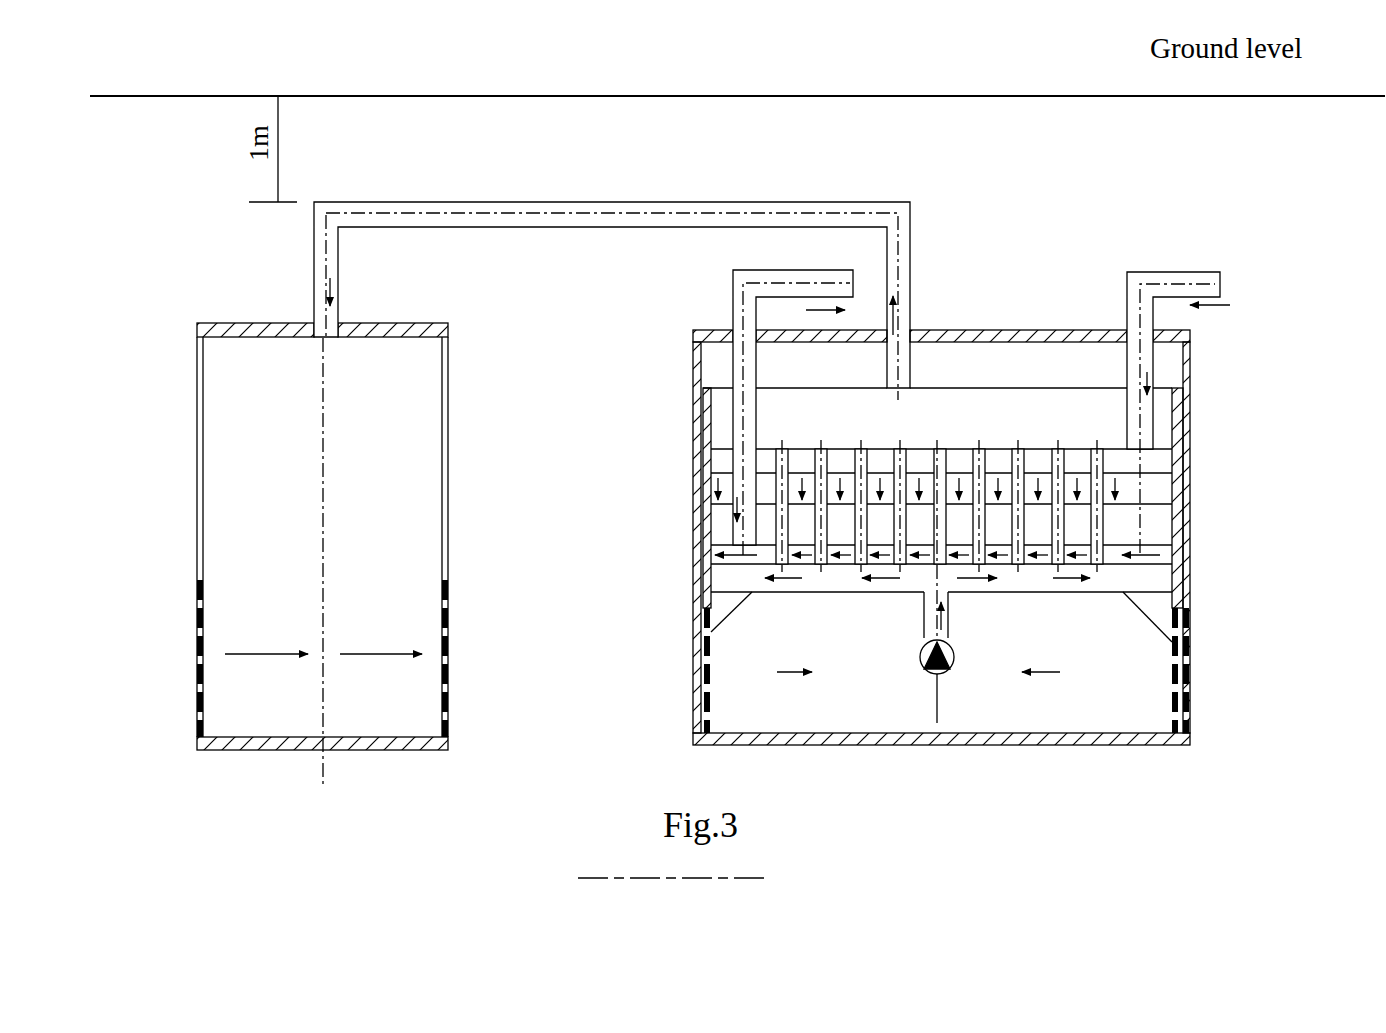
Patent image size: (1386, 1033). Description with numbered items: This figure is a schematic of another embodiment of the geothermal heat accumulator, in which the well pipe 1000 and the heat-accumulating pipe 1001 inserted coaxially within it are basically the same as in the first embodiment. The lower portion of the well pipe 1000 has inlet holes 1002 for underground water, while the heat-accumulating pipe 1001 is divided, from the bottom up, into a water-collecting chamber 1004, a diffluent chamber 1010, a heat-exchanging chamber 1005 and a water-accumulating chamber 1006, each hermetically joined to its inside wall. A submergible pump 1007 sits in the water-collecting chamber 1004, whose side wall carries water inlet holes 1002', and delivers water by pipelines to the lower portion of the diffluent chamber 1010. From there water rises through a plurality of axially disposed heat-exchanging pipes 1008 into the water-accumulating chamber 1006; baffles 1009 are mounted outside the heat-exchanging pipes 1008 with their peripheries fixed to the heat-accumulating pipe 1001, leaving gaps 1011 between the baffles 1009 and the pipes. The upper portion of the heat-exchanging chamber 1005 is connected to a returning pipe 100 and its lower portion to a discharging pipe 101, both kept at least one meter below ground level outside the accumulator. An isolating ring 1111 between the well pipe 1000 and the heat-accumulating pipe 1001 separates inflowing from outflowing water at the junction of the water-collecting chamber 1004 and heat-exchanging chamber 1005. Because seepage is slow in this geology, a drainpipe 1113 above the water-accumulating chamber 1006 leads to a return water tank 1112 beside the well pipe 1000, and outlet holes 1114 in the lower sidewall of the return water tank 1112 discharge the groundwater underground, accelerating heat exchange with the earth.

The returning pipe 100 is at (1160, 272).
The discharging pipe 101 is at (735, 303).
The well pipe 1000 is at (693, 492).
The heat-accumulating pipe 1001 is at (703, 412).
The inlet holes 1002 is at (651, 670).
The water inlet holes 1002' is at (1228, 670).
The water-collecting chamber 1004 is at (725, 653).
The heat-exchanging chamber 1005 is at (1160, 490).
The water-accumulating chamber 1006 is at (1165, 413).
The submergible pump 1007 is at (976, 581).
The heat-exchanging pipes 1008 is at (1108, 527).
The baffles 1009 is at (1162, 545).
The diffluent chamber 1010 is at (1172, 615).
The gaps 1011 is at (832, 470).
The isolating ring 1111 is at (703, 573).
The return water tank 1112 is at (448, 455).
The drainpipe 1113 is at (525, 228).
The outlet holes 1114 is at (448, 665).